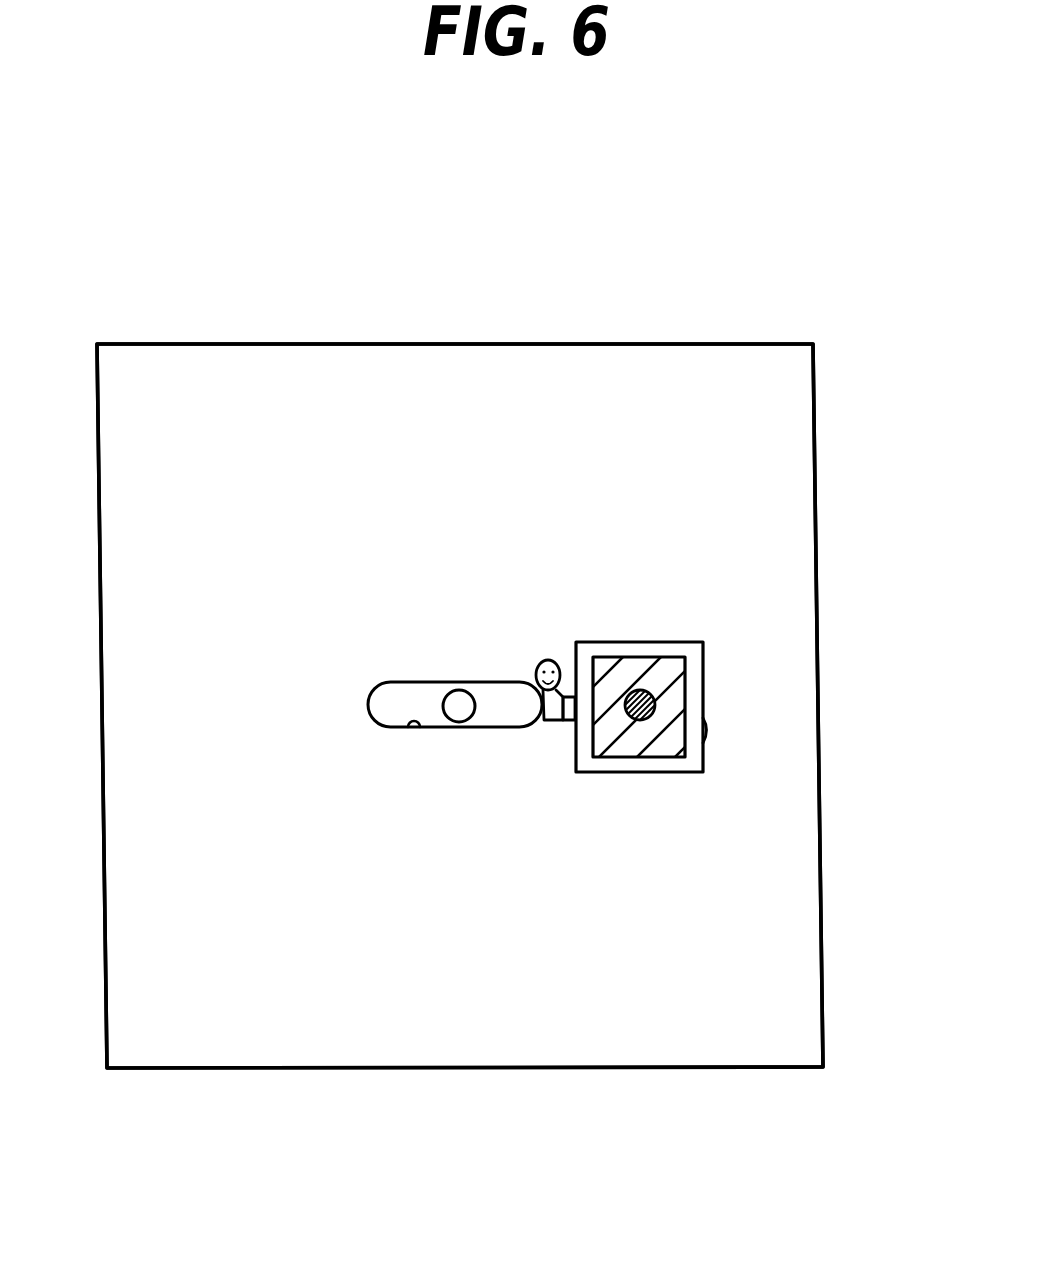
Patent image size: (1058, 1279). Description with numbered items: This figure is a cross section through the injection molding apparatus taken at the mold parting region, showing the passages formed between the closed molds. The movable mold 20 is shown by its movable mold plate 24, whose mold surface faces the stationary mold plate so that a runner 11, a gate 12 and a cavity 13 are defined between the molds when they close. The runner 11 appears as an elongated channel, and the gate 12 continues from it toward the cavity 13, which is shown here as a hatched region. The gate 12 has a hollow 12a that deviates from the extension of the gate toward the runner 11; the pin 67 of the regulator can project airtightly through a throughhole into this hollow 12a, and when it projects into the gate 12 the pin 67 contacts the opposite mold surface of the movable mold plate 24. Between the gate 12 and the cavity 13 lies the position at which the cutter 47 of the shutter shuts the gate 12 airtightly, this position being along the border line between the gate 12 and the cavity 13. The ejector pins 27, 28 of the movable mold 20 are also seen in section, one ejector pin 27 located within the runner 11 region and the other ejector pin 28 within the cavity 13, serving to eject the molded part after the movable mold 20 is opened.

The movable mold 20 is at (220, 343).
The movable mold plate 24 is at (397, 357).
The ejector pin 27 is at (462, 690).
The hollow of the gate 12a is at (550, 662).
The pin 67 is at (545, 662).
The gate 12 is at (547, 723).
The cutter 47 is at (568, 723).
The cavity 13 is at (703, 740).
The ejector pin 28 is at (652, 694).
The runner 11 is at (402, 727).